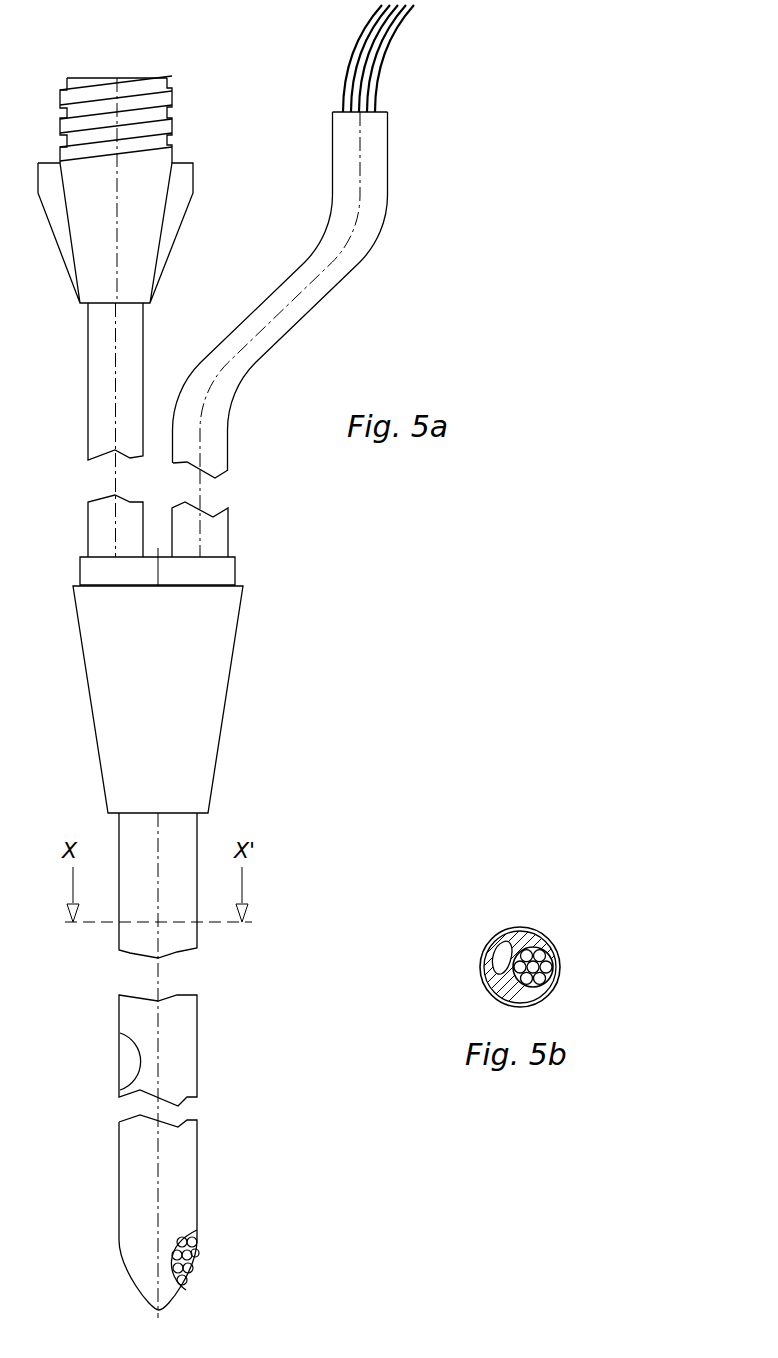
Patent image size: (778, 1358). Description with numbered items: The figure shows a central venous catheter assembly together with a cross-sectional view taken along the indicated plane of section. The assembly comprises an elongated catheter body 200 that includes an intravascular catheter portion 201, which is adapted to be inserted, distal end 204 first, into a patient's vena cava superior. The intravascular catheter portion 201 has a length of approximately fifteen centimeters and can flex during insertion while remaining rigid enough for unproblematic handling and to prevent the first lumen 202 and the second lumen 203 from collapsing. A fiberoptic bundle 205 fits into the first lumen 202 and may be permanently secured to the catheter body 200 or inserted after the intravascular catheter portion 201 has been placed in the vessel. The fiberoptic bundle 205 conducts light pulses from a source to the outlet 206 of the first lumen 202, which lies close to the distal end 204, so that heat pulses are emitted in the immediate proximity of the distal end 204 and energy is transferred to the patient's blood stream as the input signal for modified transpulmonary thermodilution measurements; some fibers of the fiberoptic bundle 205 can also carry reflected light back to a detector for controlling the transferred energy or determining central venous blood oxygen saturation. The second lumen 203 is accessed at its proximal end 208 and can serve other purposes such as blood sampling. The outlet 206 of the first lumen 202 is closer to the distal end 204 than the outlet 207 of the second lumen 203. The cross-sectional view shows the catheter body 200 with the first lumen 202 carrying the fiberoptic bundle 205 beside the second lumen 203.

In FIG. 5A, the catheter body 200 is at (182, 833).
In FIG. 5B, the catheter body 200 is at (526, 930).
In FIG. 5A, the intravascular catheter portion 201 is at (182, 1090).
In FIG. 5B, the first lumen 202 is at (555, 953).
In FIG. 5B, the second lumen 203 is at (495, 958).
In FIG. 5A, the distal end 204 is at (173, 1302).
In FIG. 5A, the fiberoptic bundle 205 is at (383, 45).
In FIG. 5B, the fiberoptic bundle 205 is at (545, 967).
In FIG. 5A, the outlet of the first lumen 206 is at (197, 1247).
In FIG. 5A, the outlet of the second lumen 207 is at (133, 1048).
In FIG. 5A, the proximal end 208 is at (127, 77).